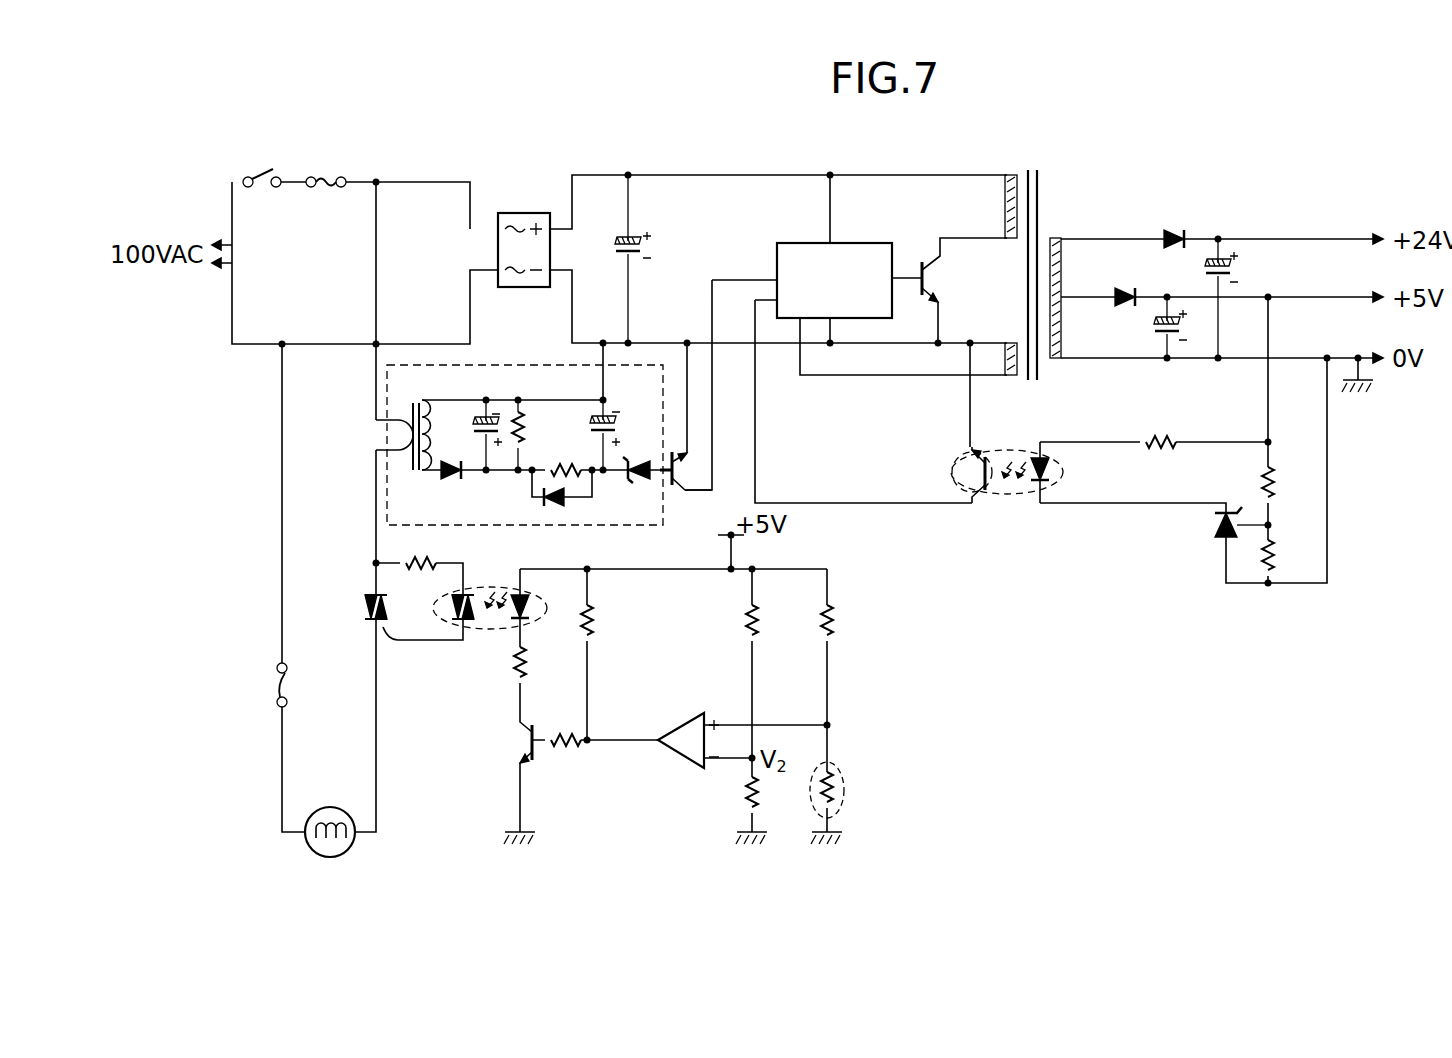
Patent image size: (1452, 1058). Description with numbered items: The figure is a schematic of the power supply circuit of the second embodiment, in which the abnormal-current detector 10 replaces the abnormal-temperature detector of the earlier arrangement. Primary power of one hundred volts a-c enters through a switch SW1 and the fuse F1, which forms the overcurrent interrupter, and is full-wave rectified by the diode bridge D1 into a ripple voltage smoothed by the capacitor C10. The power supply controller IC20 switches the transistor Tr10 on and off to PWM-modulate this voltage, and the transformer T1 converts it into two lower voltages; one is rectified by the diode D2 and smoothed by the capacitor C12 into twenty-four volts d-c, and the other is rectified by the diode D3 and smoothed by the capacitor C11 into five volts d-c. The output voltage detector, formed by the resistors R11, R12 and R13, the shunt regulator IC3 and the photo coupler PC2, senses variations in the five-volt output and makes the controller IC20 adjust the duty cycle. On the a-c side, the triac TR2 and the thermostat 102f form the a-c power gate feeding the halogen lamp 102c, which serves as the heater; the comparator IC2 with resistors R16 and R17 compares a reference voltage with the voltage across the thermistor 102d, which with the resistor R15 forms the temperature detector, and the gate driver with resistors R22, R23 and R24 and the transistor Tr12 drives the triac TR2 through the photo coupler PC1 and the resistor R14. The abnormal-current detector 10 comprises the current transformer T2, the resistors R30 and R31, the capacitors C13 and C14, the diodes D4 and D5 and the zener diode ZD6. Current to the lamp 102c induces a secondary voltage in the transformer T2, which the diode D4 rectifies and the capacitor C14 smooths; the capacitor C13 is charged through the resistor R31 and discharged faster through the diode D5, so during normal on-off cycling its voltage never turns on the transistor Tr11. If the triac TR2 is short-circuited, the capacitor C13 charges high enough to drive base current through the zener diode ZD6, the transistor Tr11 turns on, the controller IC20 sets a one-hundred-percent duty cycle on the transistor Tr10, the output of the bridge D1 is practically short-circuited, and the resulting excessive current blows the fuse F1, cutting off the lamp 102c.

The power switch SW1 is at (270, 165).
The fuse F1 is at (326, 165).
The diode bridge D1 is at (524, 235).
The capacitor C10 is at (658, 259).
The abnormal-current detector 10 is at (535, 362).
The power supply controller IC20 is at (835, 266).
The transistor Tr10 is at (949, 290).
The transformer T1 is at (1033, 264).
The diode D3 is at (1174, 224).
The diode D2 is at (1125, 281).
The capacitor C12 is at (1245, 298).
The capacitor C11 is at (1143, 327).
The photo coupler PC2 is at (1007, 460).
The resistor R13 is at (1154, 427).
The resistor R11 is at (1296, 485).
The resistor R12 is at (1296, 557).
The shunt regulator IC3 is at (1219, 527).
The current transformer T2 is at (405, 422).
The capacitor C14 is at (476, 422).
The resistor R30 is at (544, 435).
The capacitor C13 is at (623, 425).
The resistor R31 is at (571, 455).
The diode D4 is at (452, 487).
The diode D5 is at (534, 508).
The zener diode ZD6 is at (635, 485).
The transistor Tr11 is at (692, 486).
The resistor R14 is at (421, 549).
The triac TR2 is at (347, 609).
The photocoupler PC1 is at (490, 593).
The resistor R24 is at (545, 664).
The transistor Tr12 is at (498, 744).
The resistor R23 is at (566, 760).
The resistor R22 is at (613, 624).
The comparator IC2 is at (679, 733).
The resistor R17 is at (778, 624).
The resistor R15 is at (853, 624).
The resistor R16 is at (725, 795).
The thermistor 102d is at (860, 790).
The thermostat 102f is at (254, 685).
The halogen lamp 102c is at (334, 847).